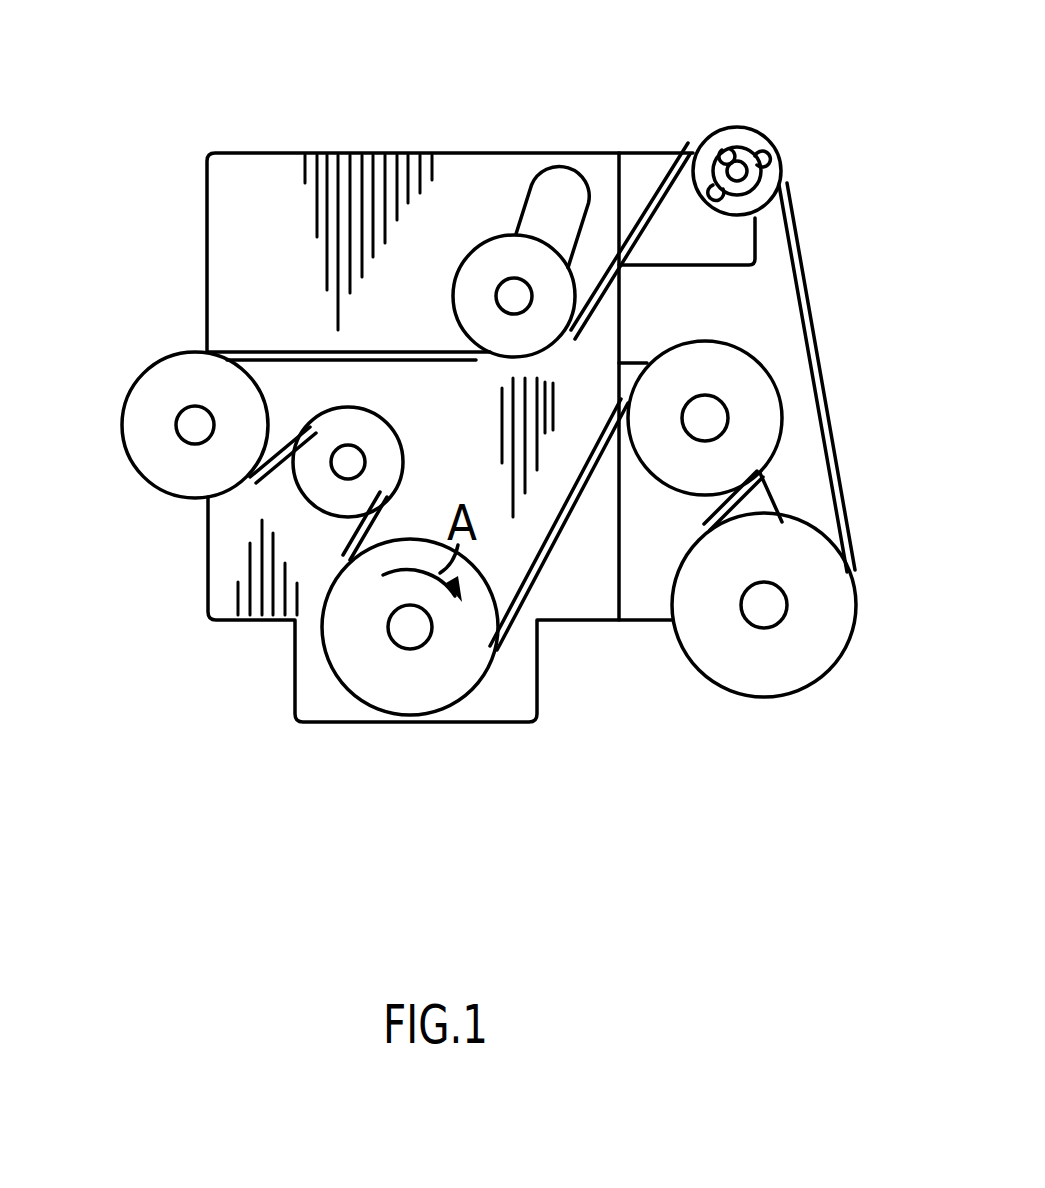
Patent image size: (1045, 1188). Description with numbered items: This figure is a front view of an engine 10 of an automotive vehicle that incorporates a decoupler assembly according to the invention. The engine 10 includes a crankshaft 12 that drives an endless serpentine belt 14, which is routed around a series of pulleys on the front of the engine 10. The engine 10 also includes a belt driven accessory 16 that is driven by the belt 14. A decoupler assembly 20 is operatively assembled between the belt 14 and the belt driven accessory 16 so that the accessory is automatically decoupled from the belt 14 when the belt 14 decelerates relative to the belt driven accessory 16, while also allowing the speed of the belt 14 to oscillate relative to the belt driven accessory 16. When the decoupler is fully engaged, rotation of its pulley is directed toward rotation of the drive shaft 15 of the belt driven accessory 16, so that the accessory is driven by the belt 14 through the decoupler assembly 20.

The engine 10 is at (173, 145).
The crankshaft 12 is at (410, 642).
The endless serpentine belt 14 is at (553, 553).
The drive shaft 15 is at (750, 170).
The belt driven accessory 16 is at (755, 147).
The decoupler assembly 20 is at (750, 177).